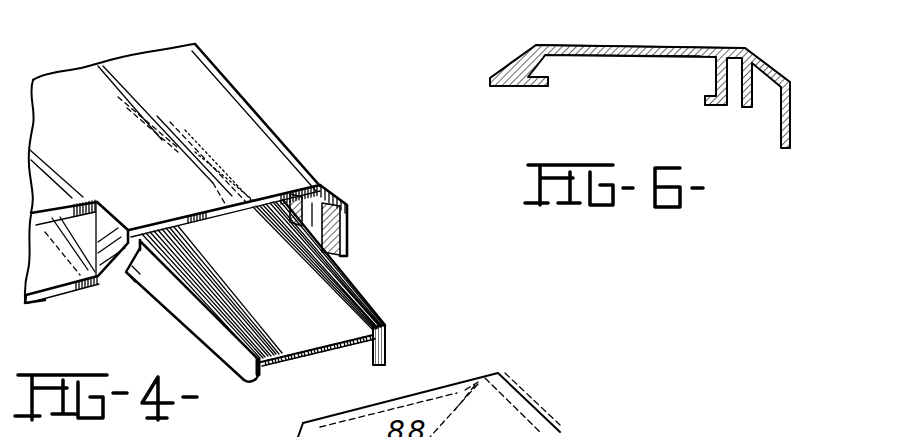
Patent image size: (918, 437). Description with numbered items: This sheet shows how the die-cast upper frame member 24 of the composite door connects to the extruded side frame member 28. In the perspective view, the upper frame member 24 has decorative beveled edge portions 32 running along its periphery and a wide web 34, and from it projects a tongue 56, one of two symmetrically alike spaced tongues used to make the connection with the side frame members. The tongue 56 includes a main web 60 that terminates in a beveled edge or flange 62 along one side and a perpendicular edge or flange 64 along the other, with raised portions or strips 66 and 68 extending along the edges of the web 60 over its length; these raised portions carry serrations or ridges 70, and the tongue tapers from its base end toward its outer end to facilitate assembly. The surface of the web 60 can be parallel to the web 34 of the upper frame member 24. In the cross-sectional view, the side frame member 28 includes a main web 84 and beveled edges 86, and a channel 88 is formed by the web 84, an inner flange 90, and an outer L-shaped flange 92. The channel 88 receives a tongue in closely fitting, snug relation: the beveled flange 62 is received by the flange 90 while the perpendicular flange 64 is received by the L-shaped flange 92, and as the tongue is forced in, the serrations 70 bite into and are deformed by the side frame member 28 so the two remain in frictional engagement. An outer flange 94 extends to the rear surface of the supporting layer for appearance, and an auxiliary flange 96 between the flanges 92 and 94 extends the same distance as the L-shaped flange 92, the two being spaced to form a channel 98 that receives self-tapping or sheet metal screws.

In FIG. 4, the upper frame member 24 is at (281, 107).
In FIG. 6, the side frame member 28 is at (797, 55).
In FIG. 4, the beveled edge portions 32 is at (327, 188).
In FIG. 4, the web 34 is at (44, 296).
In FIG. 4, the tongue 56 is at (367, 280).
In FIG. 4, the main web 60 is at (268, 265).
In FIG. 4, the beveled edge or flange 62 is at (252, 384).
In FIG. 4, the perpendicular edge or flange 64 is at (373, 348).
In FIG. 4, the raised portion or strip 66 is at (250, 322).
In FIG. 4, the raised portion or strip 68 is at (323, 293).
In FIG. 4, the serrations or ridges 70 is at (337, 273).
In FIG. 6, the main web 84 is at (660, 20).
In FIG. 6, the beveled edges 86 is at (517, 63).
In FIG. 6, the channel 88 is at (603, 55).
In FIG. 6, the inner flange 90 is at (549, 73).
In FIG. 6, the outer L-shaped flange 92 is at (714, 77).
In FIG. 6, the outer flange 94 is at (792, 135).
In FIG. 6, the auxiliary flange 96 is at (750, 105).
In FIG. 6, the channel 98 is at (733, 100).